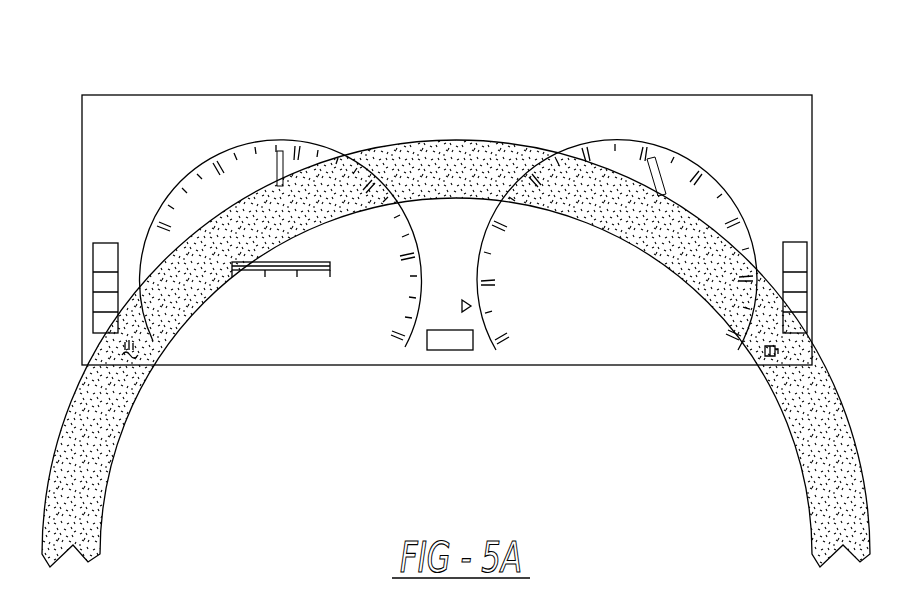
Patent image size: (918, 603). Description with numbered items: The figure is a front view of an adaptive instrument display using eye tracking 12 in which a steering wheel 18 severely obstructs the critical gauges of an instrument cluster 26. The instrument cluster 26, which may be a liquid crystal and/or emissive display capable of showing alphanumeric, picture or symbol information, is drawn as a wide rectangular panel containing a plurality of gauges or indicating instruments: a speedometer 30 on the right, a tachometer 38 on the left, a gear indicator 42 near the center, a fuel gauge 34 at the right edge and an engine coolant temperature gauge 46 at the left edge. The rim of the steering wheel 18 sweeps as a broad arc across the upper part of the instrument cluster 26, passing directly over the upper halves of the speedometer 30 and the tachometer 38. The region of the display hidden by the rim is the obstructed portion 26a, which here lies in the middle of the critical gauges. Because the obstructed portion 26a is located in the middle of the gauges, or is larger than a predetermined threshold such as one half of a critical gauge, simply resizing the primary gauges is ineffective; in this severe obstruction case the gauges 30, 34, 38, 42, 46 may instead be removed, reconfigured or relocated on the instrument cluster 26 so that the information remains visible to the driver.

The adaptive instrument display using eye tracking 12 is at (143, 118).
The steering wheel 18 is at (830, 466).
The instrument cluster 26 is at (758, 117).
The obstructed portion 26a is at (370, 185).
The speedometer 30 is at (673, 320).
The fuel gauge 34 is at (810, 272).
The tachometer 38 is at (230, 312).
The gear indicator 42 is at (448, 350).
The engine coolant temperature gauge 46 is at (92, 272).